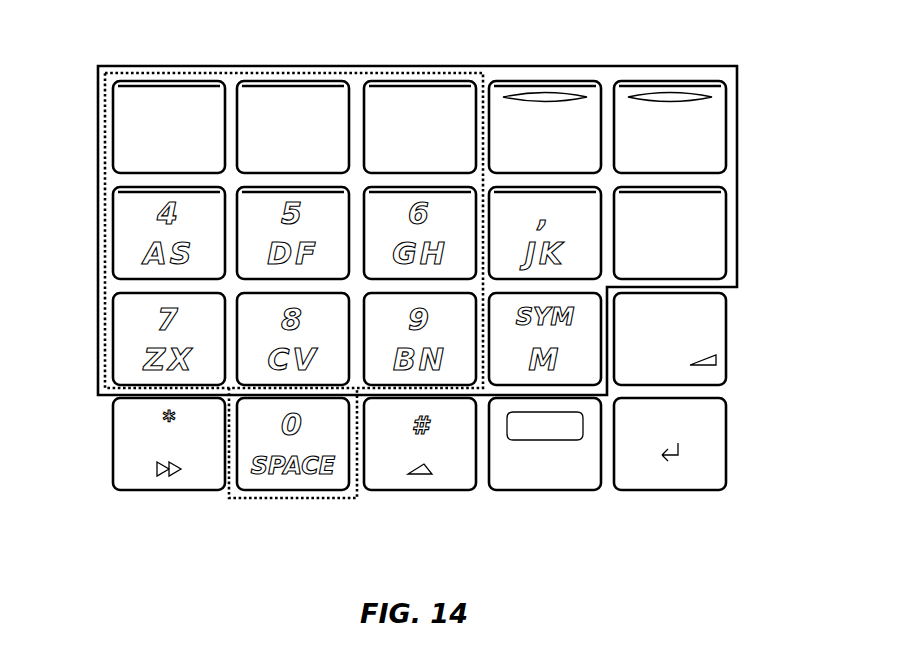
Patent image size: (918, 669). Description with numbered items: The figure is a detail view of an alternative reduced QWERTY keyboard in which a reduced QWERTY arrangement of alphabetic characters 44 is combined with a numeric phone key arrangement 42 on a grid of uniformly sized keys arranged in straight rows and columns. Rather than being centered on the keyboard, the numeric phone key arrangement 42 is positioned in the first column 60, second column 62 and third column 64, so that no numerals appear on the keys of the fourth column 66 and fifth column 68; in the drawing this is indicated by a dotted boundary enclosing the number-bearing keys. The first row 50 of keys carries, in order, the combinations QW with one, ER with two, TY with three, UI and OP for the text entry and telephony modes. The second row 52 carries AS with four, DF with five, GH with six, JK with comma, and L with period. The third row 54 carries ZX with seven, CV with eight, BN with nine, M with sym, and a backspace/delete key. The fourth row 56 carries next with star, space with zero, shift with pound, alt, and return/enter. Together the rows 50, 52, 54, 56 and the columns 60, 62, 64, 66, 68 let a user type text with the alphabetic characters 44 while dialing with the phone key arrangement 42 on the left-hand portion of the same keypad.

The numeric phone key arrangement 42 is at (297, 500).
The reduced QWERTY arrangement of alphabetic characters 44 is at (95, 236).
The first row 50 is at (727, 126).
The second row 52 is at (727, 233).
The third row 54 is at (727, 342).
The fourth row 56 is at (727, 443).
The first column 60 is at (160, 78).
The second column 62 is at (293, 78).
The third column 64 is at (420, 78).
The fourth column 66 is at (547, 78).
The fifth column 68 is at (673, 78).